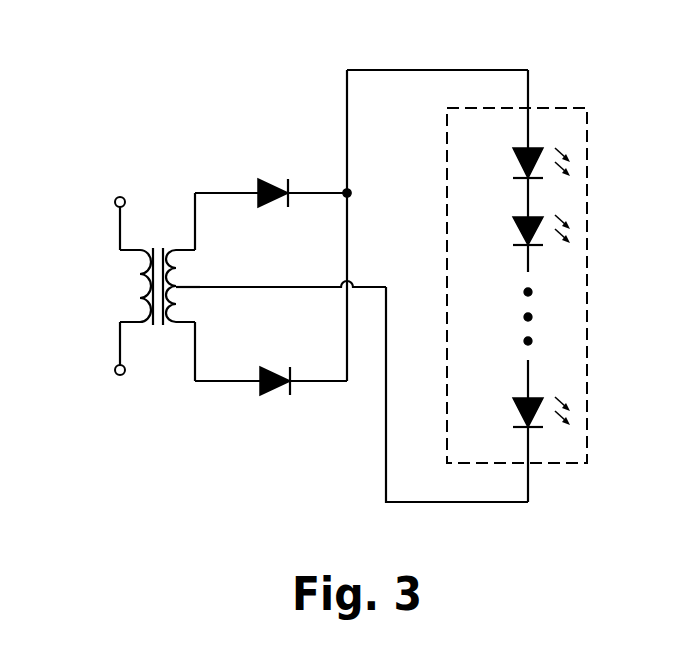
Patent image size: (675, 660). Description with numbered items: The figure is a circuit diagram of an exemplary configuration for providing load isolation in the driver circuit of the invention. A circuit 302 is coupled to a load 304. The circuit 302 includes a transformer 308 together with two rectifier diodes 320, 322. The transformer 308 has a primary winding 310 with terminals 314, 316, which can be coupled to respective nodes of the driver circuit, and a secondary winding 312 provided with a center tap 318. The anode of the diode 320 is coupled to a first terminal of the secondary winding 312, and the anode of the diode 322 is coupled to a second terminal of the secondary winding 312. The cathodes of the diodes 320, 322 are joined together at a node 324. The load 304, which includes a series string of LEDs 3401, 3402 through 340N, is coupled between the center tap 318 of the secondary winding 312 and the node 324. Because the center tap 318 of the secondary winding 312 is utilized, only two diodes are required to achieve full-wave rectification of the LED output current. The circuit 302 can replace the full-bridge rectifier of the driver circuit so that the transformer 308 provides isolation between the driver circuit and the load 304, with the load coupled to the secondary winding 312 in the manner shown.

The circuit 302 is at (99, 77).
The load 304 is at (519, 279).
The transformer 308 is at (195, 230).
The primary winding 310 is at (143, 300).
The secondary winding 312 is at (228, 310).
The terminal 314 is at (115, 200).
The terminal 316 is at (115, 368).
The center tap 318 is at (180, 280).
The diode 320 is at (283, 182).
The diode 322 is at (275, 395).
The node 324 is at (351, 193).
The LED 3401 is at (513, 165).
The LED 3402 is at (513, 232).
The LED 340N is at (513, 431).